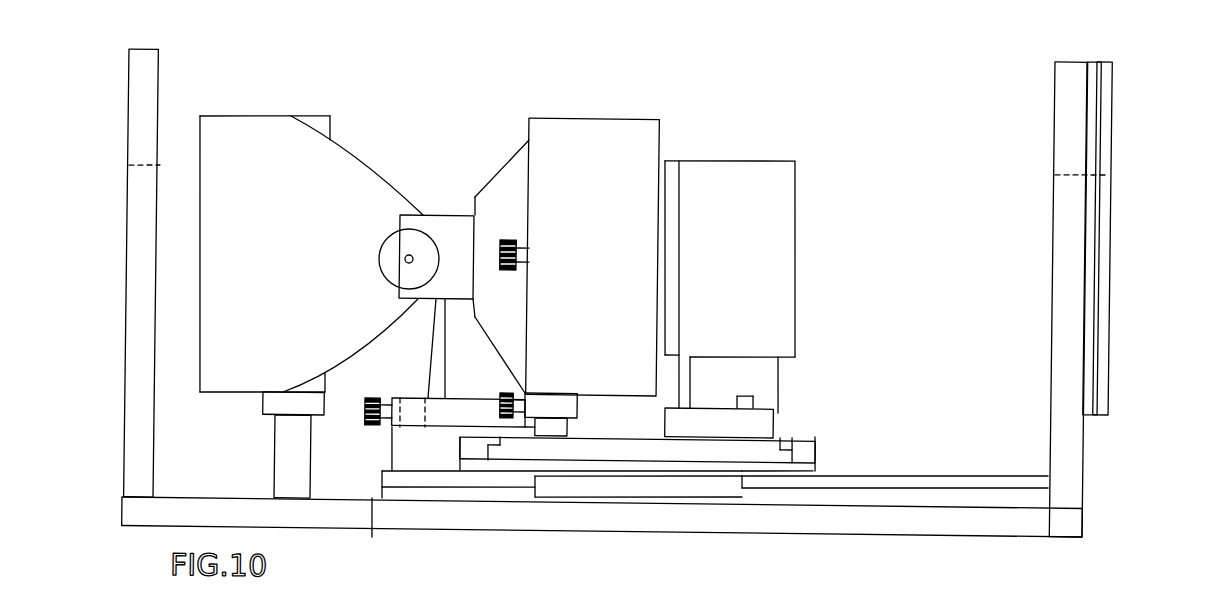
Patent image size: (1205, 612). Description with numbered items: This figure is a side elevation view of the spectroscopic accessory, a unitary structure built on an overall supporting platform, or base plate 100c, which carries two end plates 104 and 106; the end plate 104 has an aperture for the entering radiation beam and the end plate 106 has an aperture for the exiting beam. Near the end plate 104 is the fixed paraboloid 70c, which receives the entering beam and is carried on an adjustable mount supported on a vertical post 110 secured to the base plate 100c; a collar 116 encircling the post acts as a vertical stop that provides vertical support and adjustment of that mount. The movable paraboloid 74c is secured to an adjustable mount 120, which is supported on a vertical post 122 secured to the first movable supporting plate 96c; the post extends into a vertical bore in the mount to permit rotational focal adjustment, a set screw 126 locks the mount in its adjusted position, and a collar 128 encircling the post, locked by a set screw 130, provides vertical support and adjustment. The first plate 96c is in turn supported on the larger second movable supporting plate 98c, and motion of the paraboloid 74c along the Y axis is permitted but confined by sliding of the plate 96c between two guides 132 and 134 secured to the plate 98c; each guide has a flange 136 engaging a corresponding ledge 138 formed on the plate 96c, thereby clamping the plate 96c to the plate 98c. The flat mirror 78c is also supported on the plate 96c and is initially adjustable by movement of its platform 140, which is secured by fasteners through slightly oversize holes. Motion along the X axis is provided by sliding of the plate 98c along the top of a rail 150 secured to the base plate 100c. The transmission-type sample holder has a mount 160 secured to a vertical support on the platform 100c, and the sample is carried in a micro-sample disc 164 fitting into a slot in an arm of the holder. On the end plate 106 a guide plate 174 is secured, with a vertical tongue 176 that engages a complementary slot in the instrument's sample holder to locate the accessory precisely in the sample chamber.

The fixed paraboloid 70c is at (341, 146).
The movable paraboloid 74c is at (511, 154).
The flat mirror 78c is at (795, 190).
The first movable supporting plate 96c is at (707, 452).
The second movable supporting plate 98c is at (815, 468).
The base plate 100c is at (823, 514).
The end plate 104 is at (182, 62).
The end plate 106 is at (1050, 87).
The vertical post 110 is at (277, 456).
The collar 116 is at (264, 409).
The adjustable mount 120 is at (654, 119).
The vertical post 122 is at (548, 429).
The set screw 126 is at (503, 241).
The collar 128 is at (577, 406).
The set screw 130 is at (498, 391).
The guide 132 is at (461, 446).
The guide 134 is at (817, 435).
The flange 136 is at (787, 441).
The ledge 138 is at (796, 447).
The platform 140 is at (766, 419).
The rail 150 is at (1000, 495).
The mount 160 is at (439, 218).
The micro-sample disc 164 is at (384, 243).
The guide plate 174 is at (1087, 237).
The vertical tongue 176 is at (1108, 57).